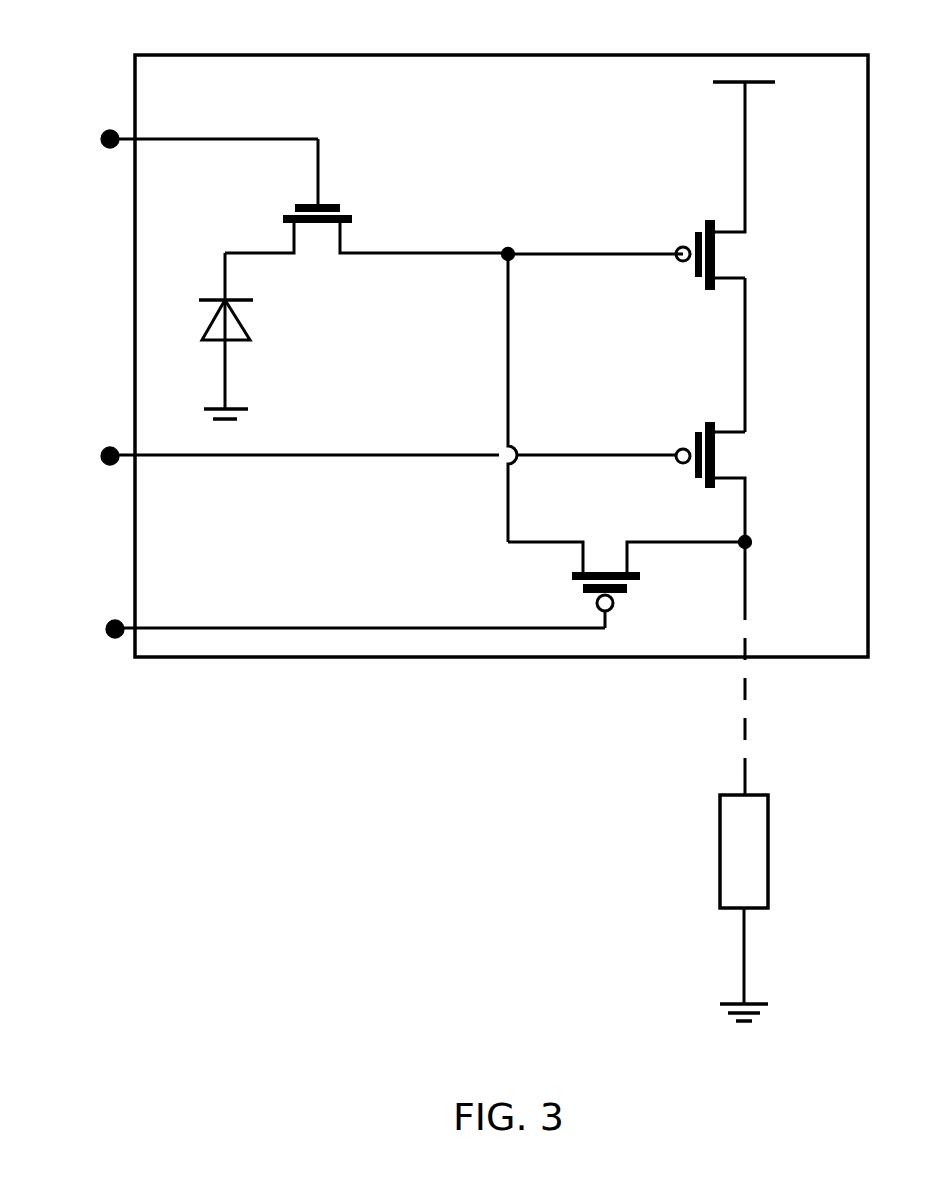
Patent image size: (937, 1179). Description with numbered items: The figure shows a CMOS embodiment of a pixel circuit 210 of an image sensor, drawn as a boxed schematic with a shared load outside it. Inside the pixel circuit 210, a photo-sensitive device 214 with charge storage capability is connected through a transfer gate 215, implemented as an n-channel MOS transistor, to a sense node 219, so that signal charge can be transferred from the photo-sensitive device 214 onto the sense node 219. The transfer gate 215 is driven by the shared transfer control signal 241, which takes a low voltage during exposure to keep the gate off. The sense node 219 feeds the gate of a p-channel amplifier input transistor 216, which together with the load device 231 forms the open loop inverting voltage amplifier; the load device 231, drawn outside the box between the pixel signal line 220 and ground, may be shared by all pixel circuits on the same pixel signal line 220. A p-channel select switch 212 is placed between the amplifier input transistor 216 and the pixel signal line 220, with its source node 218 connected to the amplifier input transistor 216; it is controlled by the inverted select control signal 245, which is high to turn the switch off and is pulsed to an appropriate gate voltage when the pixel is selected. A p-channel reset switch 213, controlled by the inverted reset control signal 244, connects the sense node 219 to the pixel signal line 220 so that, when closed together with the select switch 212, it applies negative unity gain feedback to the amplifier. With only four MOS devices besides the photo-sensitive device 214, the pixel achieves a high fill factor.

The pixel circuit 210 is at (501, 356).
The select switch 212 is at (744, 482).
The reset switch 213 is at (626, 565).
The photo-sensitive device 214 is at (257, 336).
The transfer gate 215 is at (366, 216).
The amplifier input transistor 216 is at (744, 186).
The source node 218 is at (763, 355).
The sense node 219 is at (583, 376).
The pixel signal line 220 is at (715, 666).
The load device 231 is at (709, 908).
The transfer control signal 241 is at (180, 139).
The inverted reset control signal 244 is at (324, 628).
The inverted select control signal 245 is at (357, 457).